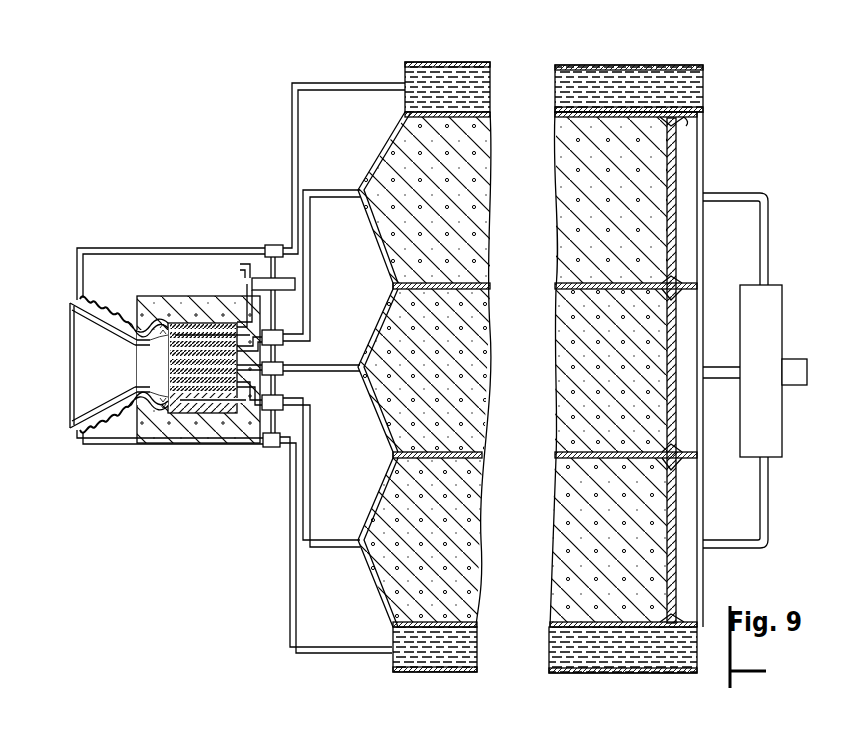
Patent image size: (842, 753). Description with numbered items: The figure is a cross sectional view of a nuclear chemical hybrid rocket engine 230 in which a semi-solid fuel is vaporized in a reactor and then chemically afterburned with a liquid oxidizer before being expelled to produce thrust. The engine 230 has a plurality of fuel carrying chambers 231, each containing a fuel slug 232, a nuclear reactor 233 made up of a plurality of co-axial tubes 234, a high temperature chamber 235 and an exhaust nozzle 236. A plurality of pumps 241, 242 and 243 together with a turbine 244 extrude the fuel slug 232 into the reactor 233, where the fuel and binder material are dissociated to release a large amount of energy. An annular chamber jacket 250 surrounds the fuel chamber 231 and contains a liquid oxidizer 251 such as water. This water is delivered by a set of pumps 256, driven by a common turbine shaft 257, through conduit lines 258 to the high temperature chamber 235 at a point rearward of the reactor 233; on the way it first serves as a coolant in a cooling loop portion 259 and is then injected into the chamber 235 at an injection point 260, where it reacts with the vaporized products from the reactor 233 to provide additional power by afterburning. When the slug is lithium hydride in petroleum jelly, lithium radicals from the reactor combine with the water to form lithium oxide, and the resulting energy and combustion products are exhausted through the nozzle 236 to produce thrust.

The nuclear chemical hybrid rocket engine 230 is at (478, 54).
The fuel carrying chamber 231 is at (676, 127).
The fuel slug 232 is at (556, 392).
The nuclear reactor 233 is at (194, 308).
The co-axial tubes 234 is at (170, 364).
The high temperature chamber 235 is at (105, 400).
The exhaust nozzle 236 is at (70, 360).
The pump 241 is at (283, 341).
The pump 242 is at (283, 371).
The pump 243 is at (283, 403).
The turbine 244 is at (295, 285).
The annular chamber jacket 250 is at (405, 66).
The liquid oxidizer 251 is at (650, 80).
The pumps 256 is at (265, 247).
The common turbine shaft 257 is at (276, 311).
The conduit lines 258 is at (298, 108).
The cooling loop portion 259 is at (98, 310).
The injection point 260 is at (163, 318).